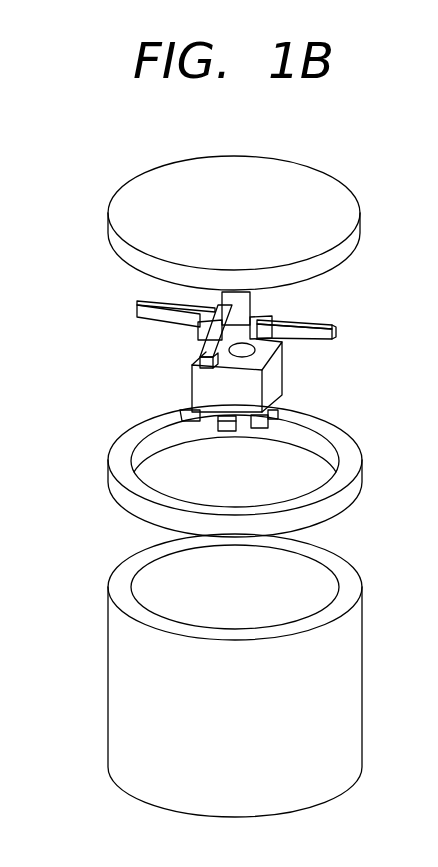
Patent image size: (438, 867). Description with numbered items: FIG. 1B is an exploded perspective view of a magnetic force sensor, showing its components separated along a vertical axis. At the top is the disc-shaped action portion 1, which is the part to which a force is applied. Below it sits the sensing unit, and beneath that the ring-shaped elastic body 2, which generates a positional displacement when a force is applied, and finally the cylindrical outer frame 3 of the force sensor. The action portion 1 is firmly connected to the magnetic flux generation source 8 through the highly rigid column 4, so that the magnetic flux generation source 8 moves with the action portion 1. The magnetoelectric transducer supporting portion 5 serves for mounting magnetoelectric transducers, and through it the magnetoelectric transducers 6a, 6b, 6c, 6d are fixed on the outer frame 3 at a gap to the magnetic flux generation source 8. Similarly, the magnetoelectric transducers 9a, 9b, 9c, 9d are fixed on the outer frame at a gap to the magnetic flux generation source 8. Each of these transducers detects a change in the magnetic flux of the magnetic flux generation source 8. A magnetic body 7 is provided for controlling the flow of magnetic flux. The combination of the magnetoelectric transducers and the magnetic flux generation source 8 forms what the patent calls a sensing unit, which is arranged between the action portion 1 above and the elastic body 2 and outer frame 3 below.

The action portion 1 is at (318, 183).
The elastic body 2 is at (108, 480).
The outer frame 3 is at (122, 623).
The column 4 is at (198, 306).
The magnetoelectric transducer supporting portion 5 is at (333, 328).
The magnetoelectric transducer 6a is at (201, 355).
The magnetoelectric transducer 6b is at (273, 337).
The magnetoelectric transducer 6c is at (262, 311).
The magnetoelectric transducer 6d is at (198, 325).
The magnetic body 7 is at (197, 385).
The magnetic flux generation source 8 is at (280, 345).
The magnetoelectric transducer 9a is at (229, 432).
The magnetoelectric transducer 9b is at (267, 429).
The magnetoelectric transducer 9c is at (280, 398).
The magnetoelectric transducer 9d is at (196, 414).